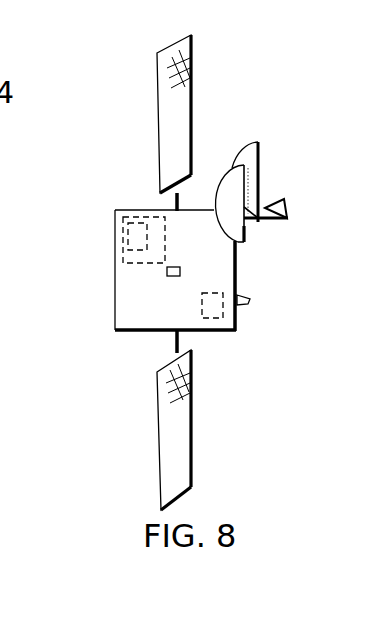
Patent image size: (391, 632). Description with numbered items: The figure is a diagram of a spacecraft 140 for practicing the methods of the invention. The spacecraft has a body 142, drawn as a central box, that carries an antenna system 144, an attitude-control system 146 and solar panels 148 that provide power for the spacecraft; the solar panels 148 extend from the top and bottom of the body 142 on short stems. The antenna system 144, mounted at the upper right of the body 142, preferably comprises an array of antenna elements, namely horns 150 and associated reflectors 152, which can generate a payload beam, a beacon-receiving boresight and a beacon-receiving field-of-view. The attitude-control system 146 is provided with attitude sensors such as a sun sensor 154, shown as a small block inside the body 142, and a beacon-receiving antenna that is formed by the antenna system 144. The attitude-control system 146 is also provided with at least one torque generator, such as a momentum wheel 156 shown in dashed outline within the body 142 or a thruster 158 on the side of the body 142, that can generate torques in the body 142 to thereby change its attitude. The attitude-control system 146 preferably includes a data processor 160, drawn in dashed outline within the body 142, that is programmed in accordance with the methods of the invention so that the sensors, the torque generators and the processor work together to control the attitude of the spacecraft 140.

The spacecraft 140 is at (84, 413).
The body 142 is at (117, 317).
The antenna system 144 is at (287, 150).
The attitude-control system 146 is at (119, 263).
The solar panels 148 is at (188, 96).
The horns 150 is at (285, 202).
The reflectors 152 is at (258, 186).
The sun sensor 154 is at (167, 271).
The momentum wheel 156 is at (223, 317).
The thruster 158 is at (241, 293).
The data processor 160 is at (120, 226).